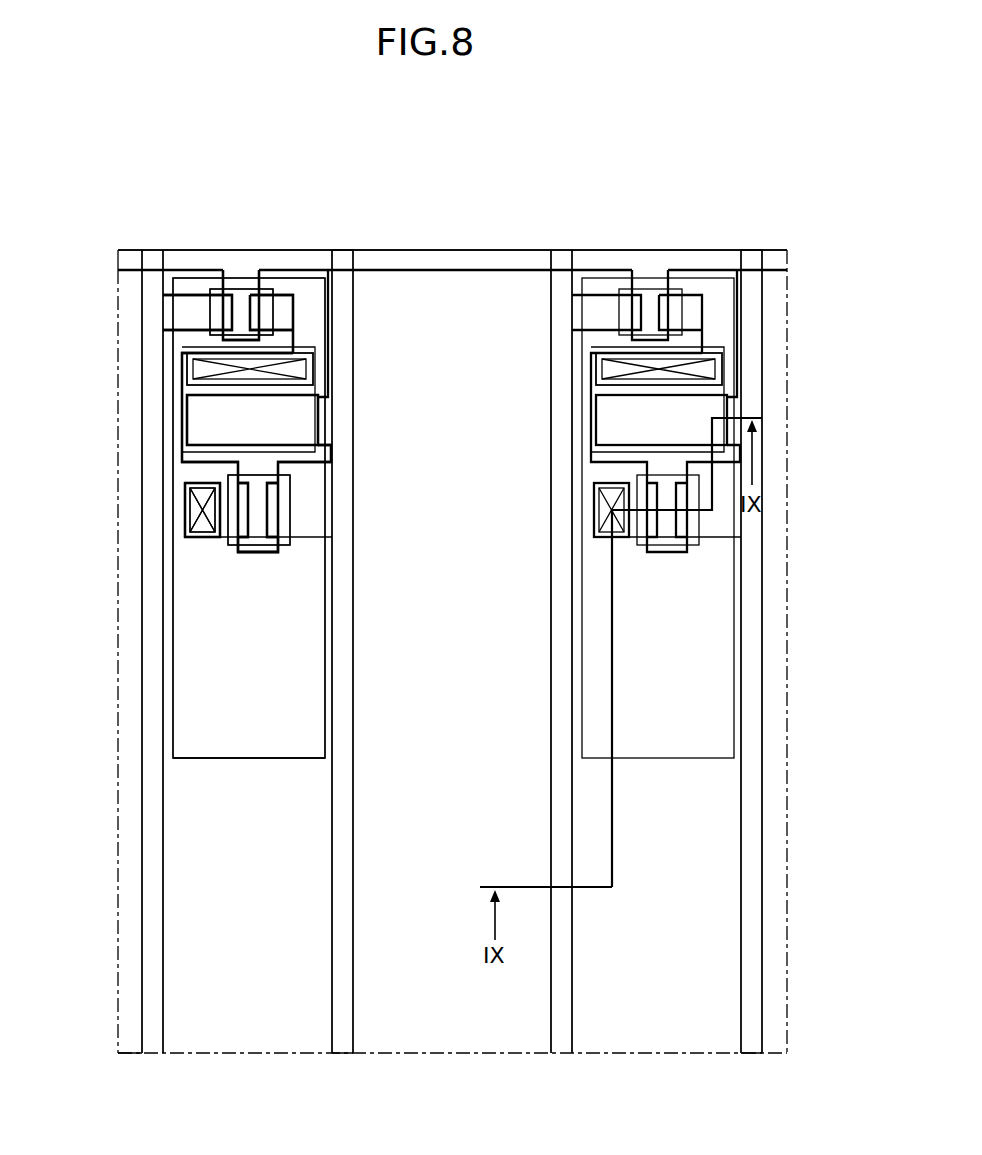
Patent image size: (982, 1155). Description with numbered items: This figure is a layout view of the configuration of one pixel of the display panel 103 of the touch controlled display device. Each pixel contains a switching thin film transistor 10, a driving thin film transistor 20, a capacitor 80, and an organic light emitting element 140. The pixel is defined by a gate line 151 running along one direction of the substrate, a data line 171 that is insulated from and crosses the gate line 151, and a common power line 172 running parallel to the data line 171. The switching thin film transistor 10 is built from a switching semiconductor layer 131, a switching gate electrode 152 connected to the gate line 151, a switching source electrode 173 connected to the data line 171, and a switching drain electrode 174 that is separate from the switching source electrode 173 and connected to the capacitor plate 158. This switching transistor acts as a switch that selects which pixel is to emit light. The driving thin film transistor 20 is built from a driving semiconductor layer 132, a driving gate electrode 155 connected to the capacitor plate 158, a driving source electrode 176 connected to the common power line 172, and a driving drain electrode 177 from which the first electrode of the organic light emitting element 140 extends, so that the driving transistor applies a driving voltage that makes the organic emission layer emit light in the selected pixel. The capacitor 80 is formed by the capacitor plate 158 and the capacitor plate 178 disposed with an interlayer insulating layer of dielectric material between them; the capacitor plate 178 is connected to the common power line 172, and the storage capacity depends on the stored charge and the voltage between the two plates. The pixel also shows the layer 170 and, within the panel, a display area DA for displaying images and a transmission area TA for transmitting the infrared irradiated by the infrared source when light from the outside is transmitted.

The display panel 103 is at (413, 140).
The switching thin film transistor 10 is at (313, 177).
The driving thin film transistor 20 is at (62, 542).
The capacitor 80 is at (62, 420).
The switching semiconductor layer 131 is at (250, 295).
The driving semiconductor layer 132 is at (234, 553).
The organic light emitting element 140 is at (202, 790).
The gate line 151 is at (118, 262).
The switching gate electrode 152 is at (236, 300).
The driving gate electrode 155 is at (258, 552).
The capacitor plate 158 is at (182, 452).
The pixel electrode 170 is at (173, 732).
The data line 171 is at (150, 362).
The common power line 172 is at (343, 295).
The switching source electrode 173 is at (188, 293).
The switching drain electrode 174 is at (293, 297).
The driving source electrode 176 is at (305, 537).
The driving drain electrode 177 is at (218, 537).
The capacitor plate 178 is at (188, 443).
The display area DA is at (692, 675).
The transmission area TA is at (692, 838).